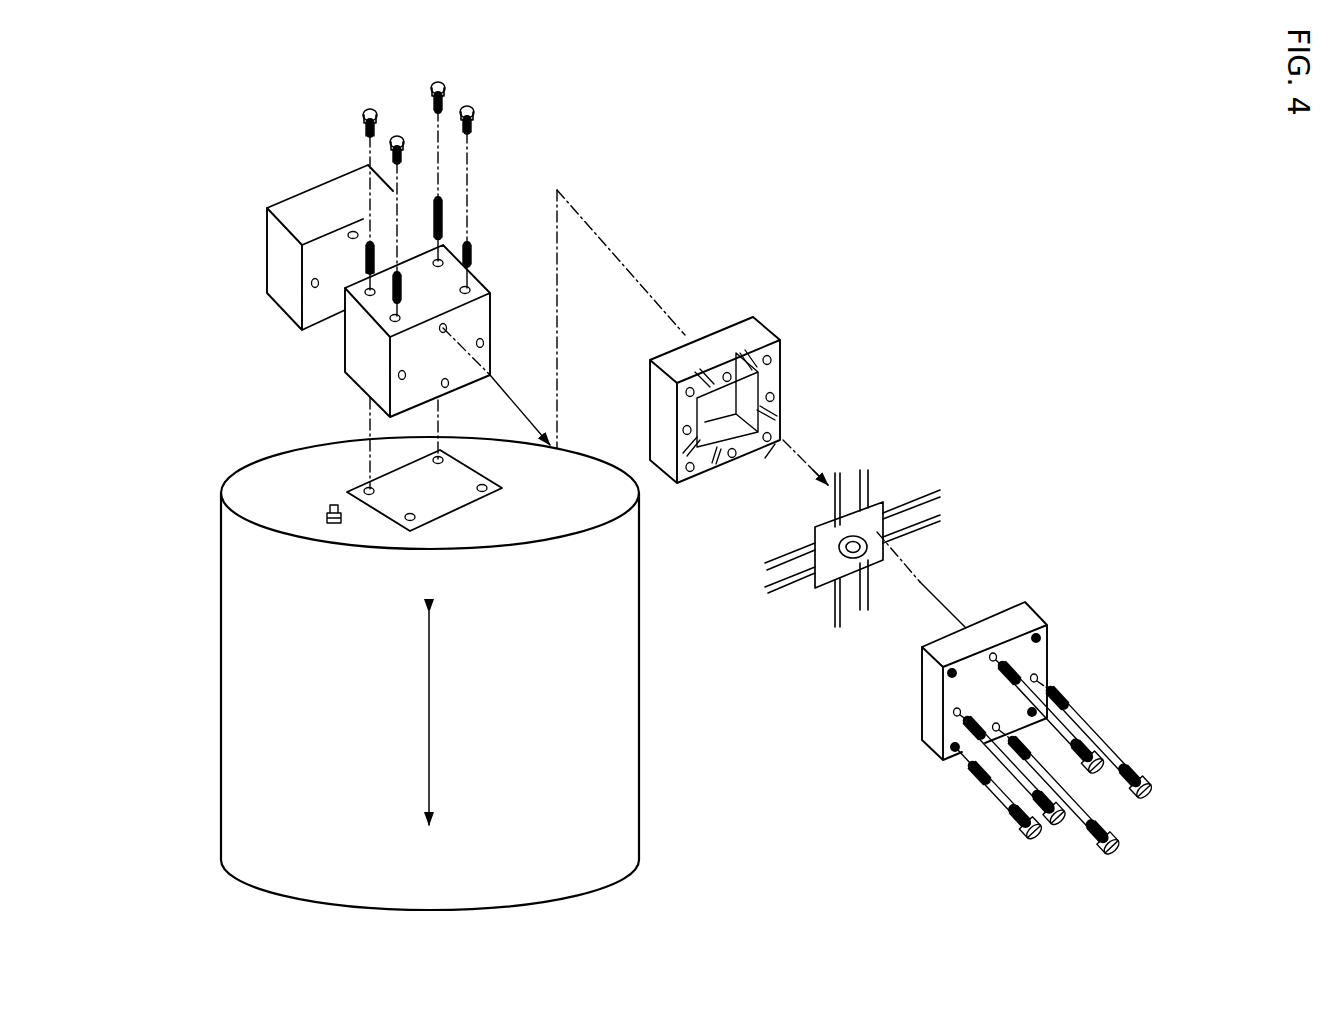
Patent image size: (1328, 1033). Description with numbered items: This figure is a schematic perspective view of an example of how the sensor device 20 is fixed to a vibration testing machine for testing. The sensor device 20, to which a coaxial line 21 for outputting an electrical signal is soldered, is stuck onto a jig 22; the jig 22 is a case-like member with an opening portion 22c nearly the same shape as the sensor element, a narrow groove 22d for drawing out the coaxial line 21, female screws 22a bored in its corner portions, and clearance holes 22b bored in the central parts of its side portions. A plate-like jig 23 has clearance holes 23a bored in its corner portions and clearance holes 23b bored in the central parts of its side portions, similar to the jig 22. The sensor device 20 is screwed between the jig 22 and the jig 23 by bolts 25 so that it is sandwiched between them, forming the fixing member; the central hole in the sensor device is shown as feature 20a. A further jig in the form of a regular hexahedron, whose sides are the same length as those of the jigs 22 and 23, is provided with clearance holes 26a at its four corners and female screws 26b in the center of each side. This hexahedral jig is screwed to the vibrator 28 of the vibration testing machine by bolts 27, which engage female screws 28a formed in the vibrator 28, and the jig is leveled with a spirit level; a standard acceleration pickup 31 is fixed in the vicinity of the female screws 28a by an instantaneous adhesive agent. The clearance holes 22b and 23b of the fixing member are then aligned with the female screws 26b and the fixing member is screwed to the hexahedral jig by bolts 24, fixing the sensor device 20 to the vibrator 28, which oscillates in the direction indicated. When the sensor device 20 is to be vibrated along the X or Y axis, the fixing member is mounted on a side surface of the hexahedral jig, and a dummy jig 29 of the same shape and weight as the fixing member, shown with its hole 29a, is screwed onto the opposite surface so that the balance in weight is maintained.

The sensor device 20 is at (887, 503).
The central hole 20a is at (862, 548).
The coaxial line 21 is at (923, 498).
The jig 22 is at (785, 296).
The female screws 22a is at (771, 360).
The clearance holes 22b is at (727, 373).
The opening portion 22c is at (722, 403).
The narrow groove 22d is at (673, 412).
The jig 23 is at (1092, 566).
The clearance holes 23a is at (1041, 637).
The clearance holes 23b is at (996, 653).
The bolts 24 is at (1140, 780).
The bolts 25 is at (1012, 823).
The clearance holes 26a is at (368, 298).
The female screws 26b is at (485, 343).
The bolts 27 is at (476, 122).
The vibrator 28 is at (220, 678).
The female screws 28a is at (352, 484).
The dummy jig 29 is at (292, 204).
The hole in block 29a is at (350, 240).
The standard acceleration pickup 31 is at (322, 524).